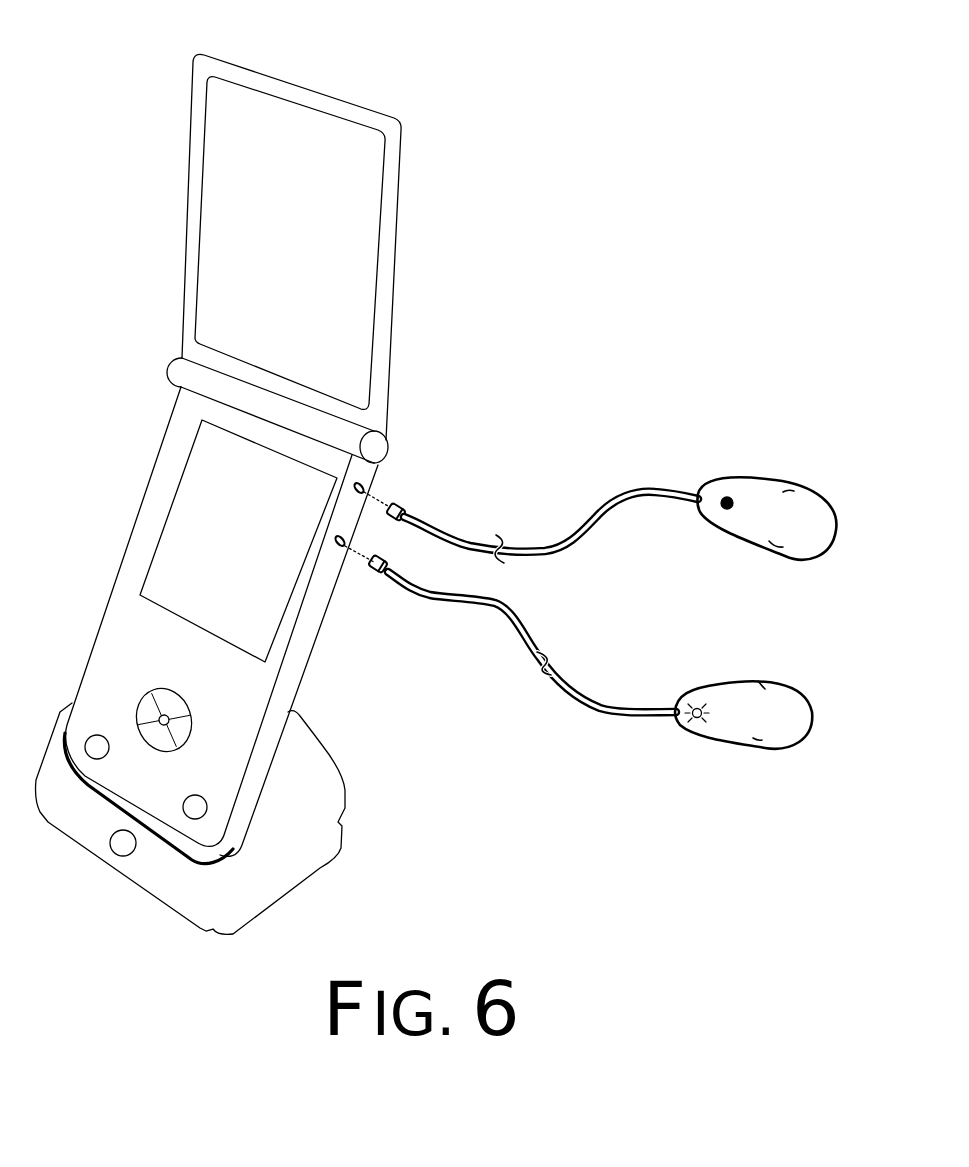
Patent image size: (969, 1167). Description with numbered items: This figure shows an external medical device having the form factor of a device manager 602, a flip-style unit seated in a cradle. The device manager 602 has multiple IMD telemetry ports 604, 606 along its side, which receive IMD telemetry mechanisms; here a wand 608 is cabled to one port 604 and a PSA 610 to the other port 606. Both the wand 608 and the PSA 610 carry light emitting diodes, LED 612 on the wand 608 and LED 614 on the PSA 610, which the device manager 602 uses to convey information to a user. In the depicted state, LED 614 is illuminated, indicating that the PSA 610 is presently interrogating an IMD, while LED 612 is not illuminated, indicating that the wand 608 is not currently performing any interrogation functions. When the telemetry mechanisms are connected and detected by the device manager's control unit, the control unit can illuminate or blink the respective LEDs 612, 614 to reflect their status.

The device manager 602 is at (348, 68).
The IMD telemetry port 604 is at (364, 486).
The IMD telemetry port 606 is at (344, 548).
The wand 608 is at (748, 478).
The PSA 610 is at (718, 678).
The light emitting diode 612 is at (724, 495).
The light emitting diode 614 is at (695, 707).